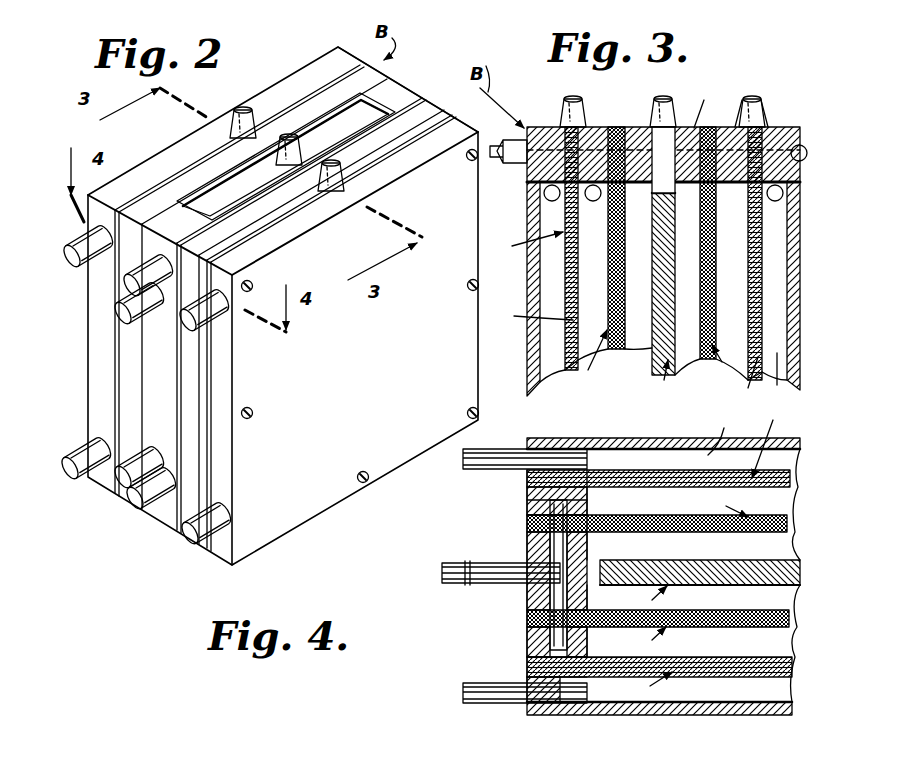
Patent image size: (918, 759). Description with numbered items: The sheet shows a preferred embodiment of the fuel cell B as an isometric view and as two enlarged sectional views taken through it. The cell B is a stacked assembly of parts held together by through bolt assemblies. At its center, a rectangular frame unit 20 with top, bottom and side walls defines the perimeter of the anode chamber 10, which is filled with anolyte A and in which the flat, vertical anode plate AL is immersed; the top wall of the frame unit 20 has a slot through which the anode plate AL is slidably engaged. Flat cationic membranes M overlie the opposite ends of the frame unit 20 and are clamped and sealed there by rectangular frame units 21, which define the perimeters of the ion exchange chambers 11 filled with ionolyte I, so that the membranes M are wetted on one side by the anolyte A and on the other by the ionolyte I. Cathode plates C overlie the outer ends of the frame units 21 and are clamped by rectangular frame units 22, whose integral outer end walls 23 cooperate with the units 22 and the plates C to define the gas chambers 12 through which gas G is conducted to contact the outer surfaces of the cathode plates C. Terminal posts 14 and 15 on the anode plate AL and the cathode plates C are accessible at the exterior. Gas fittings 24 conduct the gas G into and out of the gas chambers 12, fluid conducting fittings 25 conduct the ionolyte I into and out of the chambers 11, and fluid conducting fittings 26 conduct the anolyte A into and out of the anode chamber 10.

In FIG. 3, the anode chamber 10 is at (644, 340).
In FIG. 4, the anode chamber 10 is at (700, 583).
In FIG. 3, the ion exchange chambers 11 is at (544, 312).
In FIG. 2, the gas chambers 12 is at (163, 380).
In FIG. 3, the gas chambers 12 is at (540, 270).
In FIG. 4, the gas chambers 12 is at (678, 452).
In FIG. 2, the anode terminal post 14 is at (289, 135).
In FIG. 3, the anode terminal post 14 is at (668, 98).
In FIG. 2, the cathode terminal posts 15 is at (243, 108).
In FIG. 3, the cathode terminal posts 15 is at (562, 118).
In FIG. 2, the rectangular frame unit 20 is at (398, 90).
In FIG. 3, the rectangular frame unit 20 is at (633, 127).
In FIG. 4, the rectangular frame unit 20 is at (527, 598).
In FIG. 2, the rectangular frame units 21 is at (418, 108).
In FIG. 3, the rectangular frame units 21 is at (605, 127).
In FIG. 4, the rectangular frame units 21 is at (527, 497).
In FIG. 3, the rectangular frame units 22 is at (733, 118).
In FIG. 4, the rectangular frame units 22 is at (527, 672).
In FIG. 2, the outer end walls 23 is at (300, 538).
In FIG. 3, the outer end walls 23 is at (545, 378).
In FIG. 4, the outer end walls 23 is at (620, 438).
In FIG. 2, the gas fittings 24 is at (70, 262).
In FIG. 4, the gas fittings 24 is at (468, 462).
In FIG. 2, the fluid conducting fittings 25 is at (128, 290).
In FIG. 4, the fluid conducting fittings 25 is at (485, 563).
In FIG. 2, the fluid conducting fittings 26 is at (120, 318).
In FIG. 4, the fluid conducting fittings 26 is at (442, 572).
In FIG. 3, the anolyte A is at (704, 104).
In FIG. 4, the anolyte A is at (710, 546).
In FIG. 3, the fuel cell B is at (494, 98).
In FIG. 3, the cathode plates C is at (627, 317).
In FIG. 4, the cathode plates C is at (700, 546).
In FIG. 3, the gas G is at (640, 350).
In FIG. 4, the gas G is at (725, 551).
In FIG. 3, the ionolyte I is at (735, 246).
In FIG. 4, the ionolyte I is at (677, 572).
In FIG. 3, the cationic membranes M is at (646, 260).
In FIG. 4, the cationic membranes M is at (658, 572).
In FIG. 3, the anode plate AL is at (679, 377).
In FIG. 4, the anode plate AL is at (644, 598).